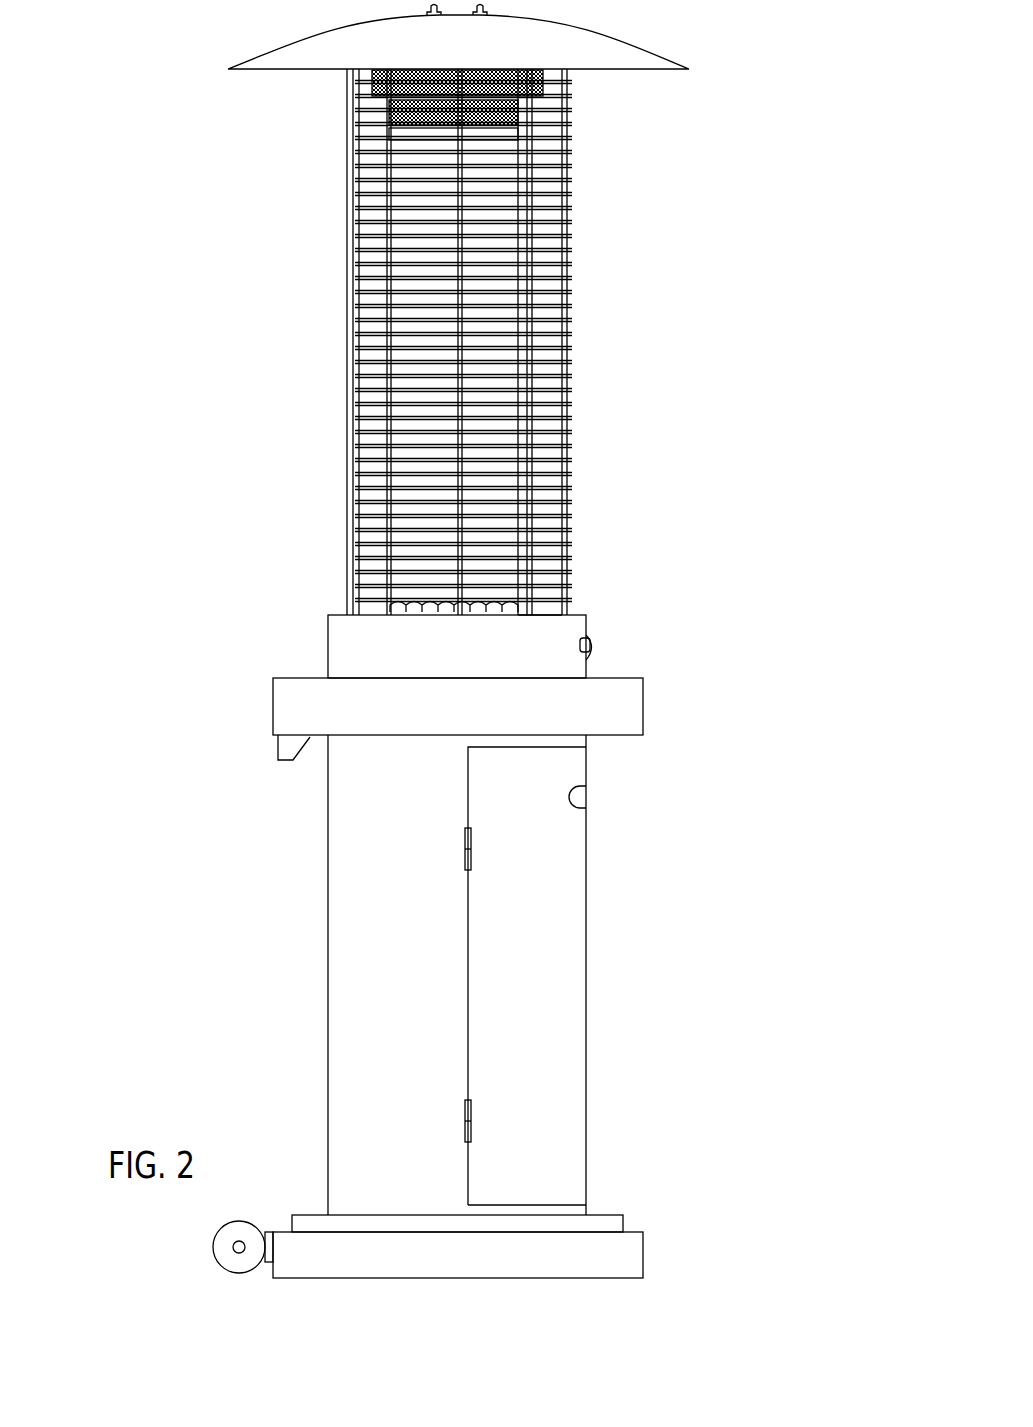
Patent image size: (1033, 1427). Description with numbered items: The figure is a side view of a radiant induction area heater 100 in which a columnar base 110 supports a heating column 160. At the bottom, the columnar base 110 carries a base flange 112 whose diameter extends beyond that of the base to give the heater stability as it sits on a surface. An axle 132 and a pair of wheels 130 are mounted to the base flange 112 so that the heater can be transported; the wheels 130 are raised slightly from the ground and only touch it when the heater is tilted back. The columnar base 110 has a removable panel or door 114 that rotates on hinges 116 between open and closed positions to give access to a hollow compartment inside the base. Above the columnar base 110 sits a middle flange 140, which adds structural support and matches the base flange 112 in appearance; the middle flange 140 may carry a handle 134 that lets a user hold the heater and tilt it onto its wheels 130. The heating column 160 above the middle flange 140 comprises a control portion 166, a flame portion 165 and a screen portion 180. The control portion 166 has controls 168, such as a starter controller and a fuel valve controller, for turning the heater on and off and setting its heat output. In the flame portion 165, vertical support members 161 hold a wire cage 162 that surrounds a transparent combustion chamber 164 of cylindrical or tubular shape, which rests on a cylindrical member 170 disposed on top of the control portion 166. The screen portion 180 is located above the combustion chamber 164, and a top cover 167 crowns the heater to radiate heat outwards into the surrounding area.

The radiant induction area heater 100 is at (211, 598).
The columnar base 110 is at (594, 937).
The base flange 112 is at (645, 1252).
The door 114 is at (572, 1053).
The hinges 116 is at (471, 845).
The wheels 130 is at (225, 1262).
The axle 132 is at (239, 1247).
The handle 134 is at (278, 748).
The middle flange 140 is at (645, 708).
The heating column 160 is at (578, 330).
The vertical support members 161 is at (530, 132).
The wire cage 162 is at (570, 392).
The transparent combustion chamber 164 is at (505, 217).
The flame portion 165 is at (555, 272).
The control portion 166 is at (328, 650).
The top cover 167 is at (606, 42).
The controls 168 is at (594, 645).
The cylindrical member 170 is at (515, 598).
The screen portion 180 is at (540, 87).